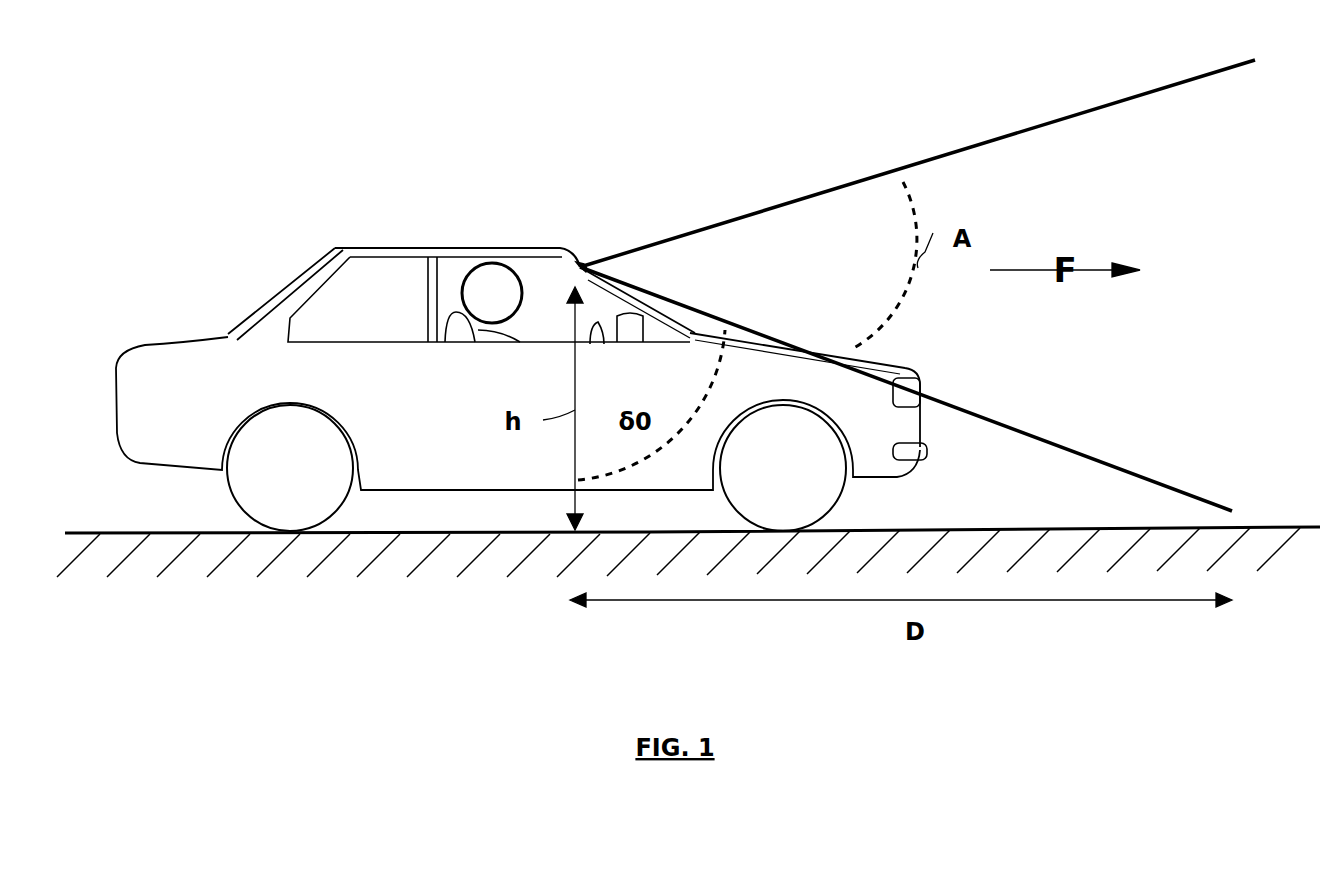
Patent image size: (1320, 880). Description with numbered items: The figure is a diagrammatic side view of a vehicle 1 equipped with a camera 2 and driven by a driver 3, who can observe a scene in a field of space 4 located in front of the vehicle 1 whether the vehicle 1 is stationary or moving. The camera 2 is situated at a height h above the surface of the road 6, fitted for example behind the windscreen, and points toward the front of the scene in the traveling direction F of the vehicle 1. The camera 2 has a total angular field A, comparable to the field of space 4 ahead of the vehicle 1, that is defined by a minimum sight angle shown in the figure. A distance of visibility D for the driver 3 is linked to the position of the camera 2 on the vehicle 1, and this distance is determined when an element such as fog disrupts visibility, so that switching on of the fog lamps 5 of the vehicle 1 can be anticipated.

The vehicle 1 is at (692, 222).
The camera 2 is at (579, 257).
The driver 3 is at (489, 247).
The field of space 4 is at (1225, 272).
The fog lamps 5 is at (913, 372).
The road 6 is at (1028, 515).